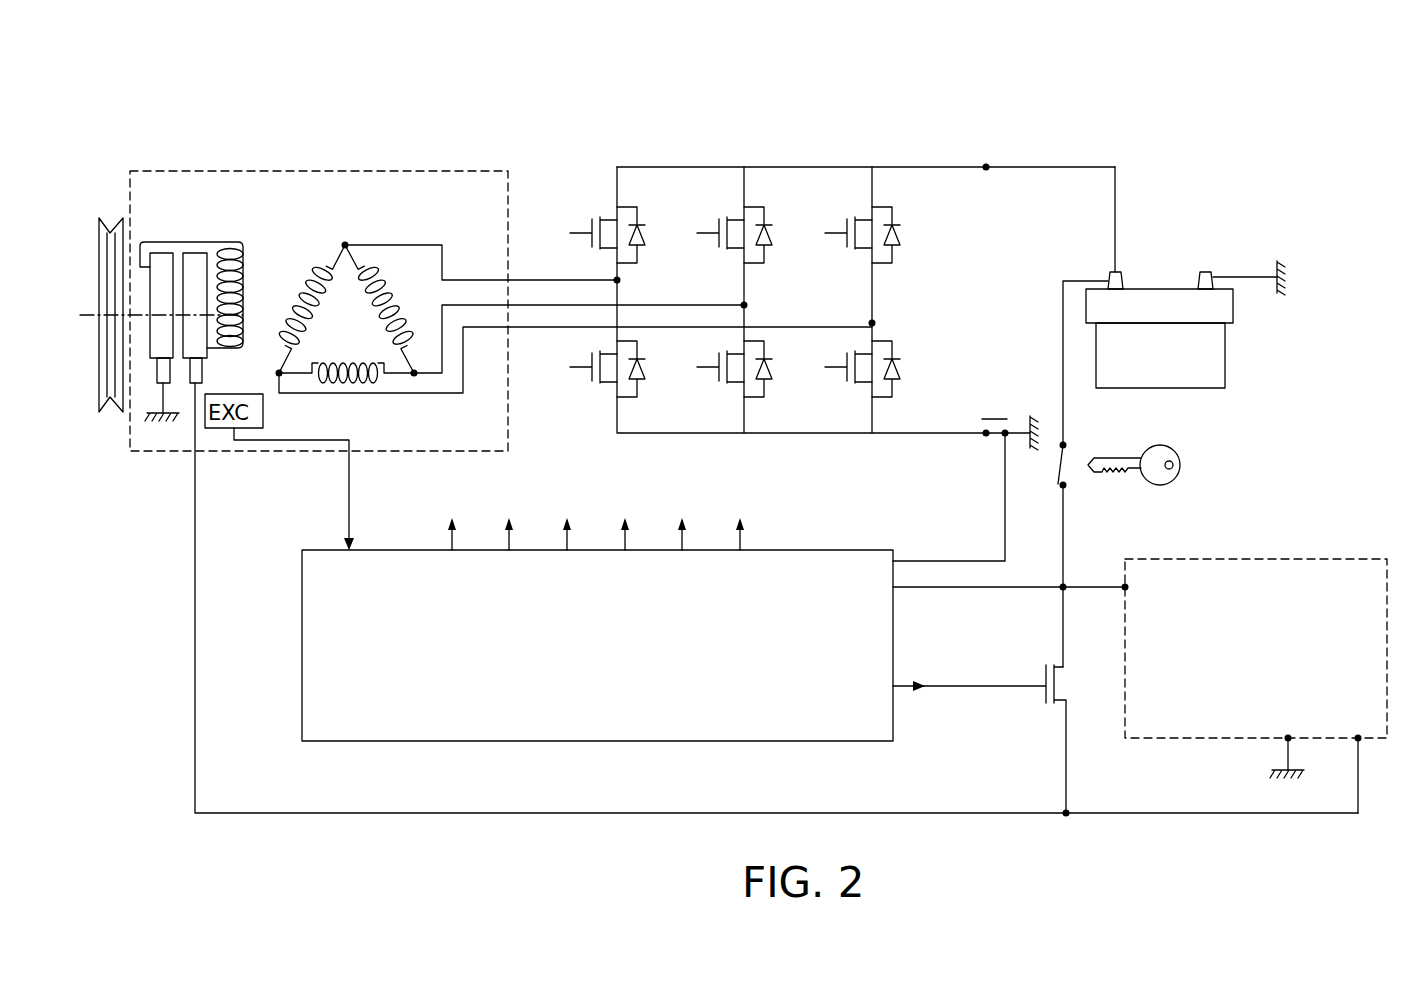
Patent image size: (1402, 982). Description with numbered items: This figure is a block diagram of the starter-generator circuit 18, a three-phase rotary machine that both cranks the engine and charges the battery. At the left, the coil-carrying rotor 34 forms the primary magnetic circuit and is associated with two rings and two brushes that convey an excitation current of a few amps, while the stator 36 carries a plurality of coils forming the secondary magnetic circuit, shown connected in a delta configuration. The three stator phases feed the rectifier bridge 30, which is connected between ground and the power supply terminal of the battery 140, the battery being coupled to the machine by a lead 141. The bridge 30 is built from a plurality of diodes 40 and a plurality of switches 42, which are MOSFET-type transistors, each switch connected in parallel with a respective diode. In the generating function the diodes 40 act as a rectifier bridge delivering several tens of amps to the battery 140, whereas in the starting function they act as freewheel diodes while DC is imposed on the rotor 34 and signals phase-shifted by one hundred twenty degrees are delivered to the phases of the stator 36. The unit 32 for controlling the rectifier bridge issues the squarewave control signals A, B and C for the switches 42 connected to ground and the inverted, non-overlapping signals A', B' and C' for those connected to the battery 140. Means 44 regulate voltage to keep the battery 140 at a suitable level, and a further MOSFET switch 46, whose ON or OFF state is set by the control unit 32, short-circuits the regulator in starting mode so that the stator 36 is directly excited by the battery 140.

The alternator/generator system 18 is at (757, 99).
The rectifier bridge 30 is at (770, 162).
The unit for controlling the rectifier bridge 32 is at (605, 648).
The coil-carrying rotor 34 is at (197, 230).
The stator 36 is at (386, 233).
The diode 40 is at (642, 258).
The switch 42 is at (610, 250).
The means for regulating voltage 44 is at (1271, 664).
The switch 46 is at (1047, 697).
The battery 140 is at (1208, 390).
The lead 141 is at (1118, 216).